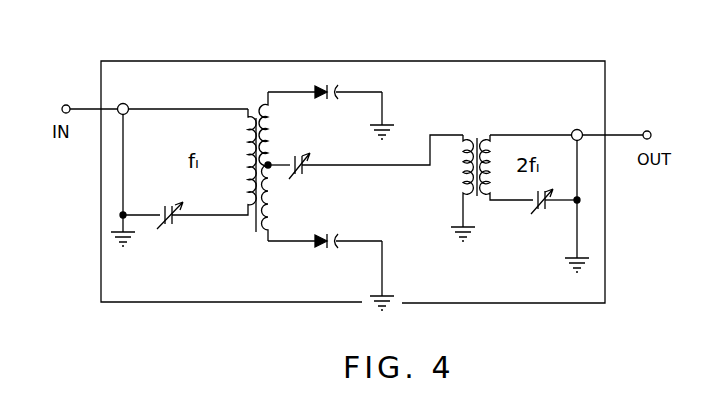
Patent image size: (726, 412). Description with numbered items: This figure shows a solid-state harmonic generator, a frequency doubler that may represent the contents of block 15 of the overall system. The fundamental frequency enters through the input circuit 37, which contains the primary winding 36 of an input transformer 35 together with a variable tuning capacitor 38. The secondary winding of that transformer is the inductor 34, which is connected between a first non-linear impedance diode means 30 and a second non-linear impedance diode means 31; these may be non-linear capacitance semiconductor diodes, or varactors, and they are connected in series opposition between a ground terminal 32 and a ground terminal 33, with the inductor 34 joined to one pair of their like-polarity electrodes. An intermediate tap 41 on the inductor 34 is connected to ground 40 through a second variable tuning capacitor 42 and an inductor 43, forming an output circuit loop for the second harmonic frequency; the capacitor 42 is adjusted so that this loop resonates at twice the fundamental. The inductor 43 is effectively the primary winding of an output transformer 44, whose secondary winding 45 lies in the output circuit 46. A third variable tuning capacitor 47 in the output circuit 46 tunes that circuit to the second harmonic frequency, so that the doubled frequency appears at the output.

The block 15 is at (478, 61).
The first non-linear impedance diode means 30 is at (323, 88).
The second non-linear impedance diode means 31 is at (327, 254).
The ground terminal 32 is at (396, 132).
The ground terminal 33 is at (392, 307).
The inductor 34 is at (276, 205).
The input transformer 35 is at (258, 122).
The primary winding 36 is at (242, 143).
The input circuit 37 is at (145, 172).
The variable tuning capacitor 38 is at (170, 232).
The ground 40 is at (475, 236).
The intermediate tap 41 is at (270, 163).
The second variable tuning capacitor 42 is at (302, 177).
The inductor 43 is at (463, 166).
The output transformer 44 is at (478, 142).
The secondary winding 45 is at (492, 172).
The output circuit 46 is at (563, 172).
The third variable tuning capacitor 47 is at (541, 212).